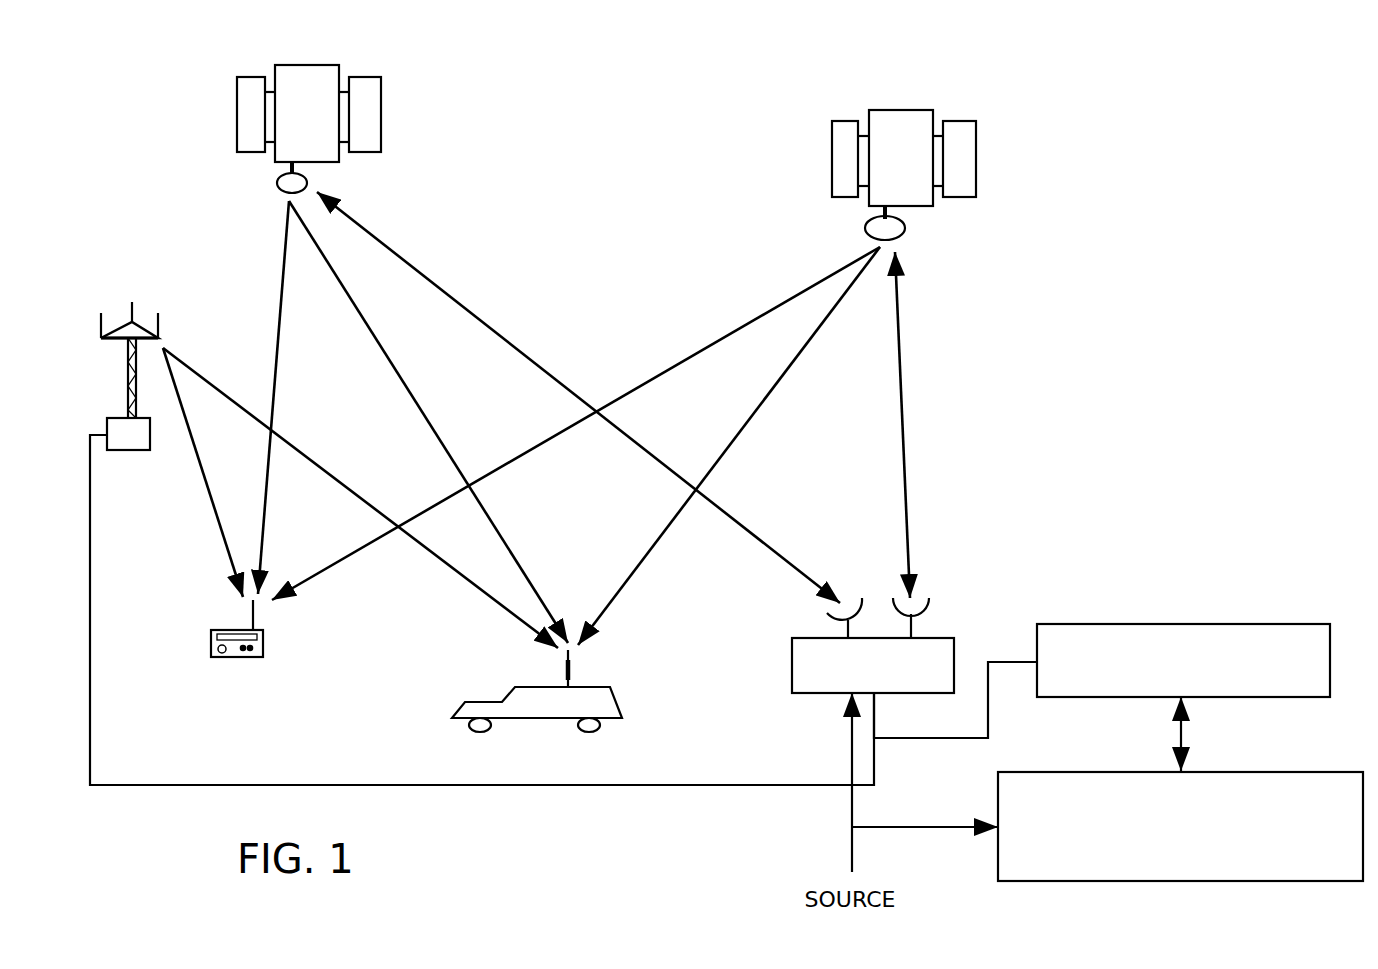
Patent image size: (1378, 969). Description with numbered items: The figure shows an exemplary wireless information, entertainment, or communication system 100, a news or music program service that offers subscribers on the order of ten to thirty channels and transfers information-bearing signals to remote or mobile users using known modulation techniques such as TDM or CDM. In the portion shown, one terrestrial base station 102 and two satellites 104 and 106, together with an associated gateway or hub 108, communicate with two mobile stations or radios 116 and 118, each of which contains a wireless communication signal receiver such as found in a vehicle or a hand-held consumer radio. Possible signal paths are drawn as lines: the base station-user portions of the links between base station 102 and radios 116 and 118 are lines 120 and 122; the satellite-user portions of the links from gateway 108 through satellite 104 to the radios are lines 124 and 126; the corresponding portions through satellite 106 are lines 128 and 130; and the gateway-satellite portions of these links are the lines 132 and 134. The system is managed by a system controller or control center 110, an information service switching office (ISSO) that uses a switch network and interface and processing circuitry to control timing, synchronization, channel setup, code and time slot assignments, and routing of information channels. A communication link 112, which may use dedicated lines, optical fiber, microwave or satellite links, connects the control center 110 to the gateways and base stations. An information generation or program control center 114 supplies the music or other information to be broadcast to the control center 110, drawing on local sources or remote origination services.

The wireless information, entertainment, or communication system 100 is at (1112, 283).
The base station 102 is at (113, 450).
The satellite 104 is at (382, 100).
The satellite 106 is at (977, 145).
The gateway or hub 108 is at (792, 676).
The control center 110 is at (1125, 622).
The communication link 112 is at (637, 783).
The information generation or program control center 114 is at (998, 806).
The mobile station or radio 116 is at (462, 710).
The mobile station or radio 118 is at (264, 648).
The line 120 is at (219, 518).
The line 122 is at (302, 452).
The line 124 is at (276, 360).
The line 126 is at (400, 337).
The line 128 is at (782, 302).
The line 130 is at (792, 368).
The line 132 is at (753, 536).
The line 134 is at (905, 455).